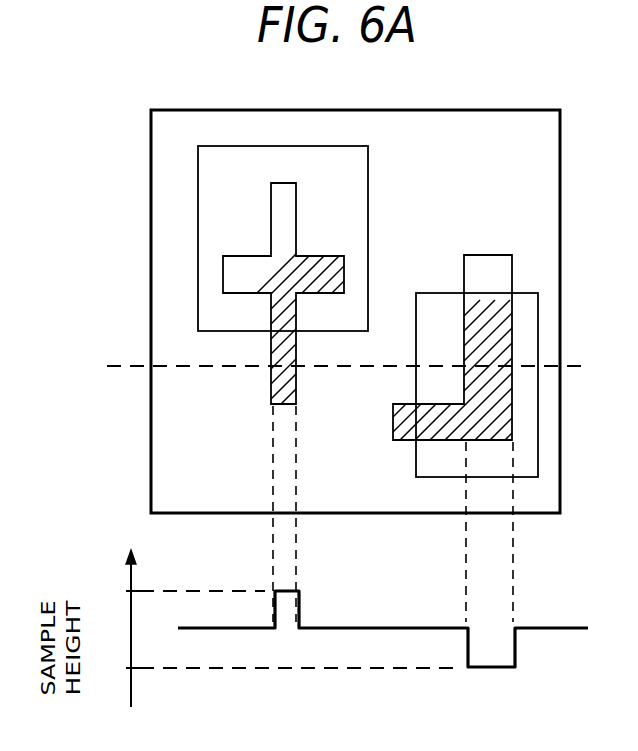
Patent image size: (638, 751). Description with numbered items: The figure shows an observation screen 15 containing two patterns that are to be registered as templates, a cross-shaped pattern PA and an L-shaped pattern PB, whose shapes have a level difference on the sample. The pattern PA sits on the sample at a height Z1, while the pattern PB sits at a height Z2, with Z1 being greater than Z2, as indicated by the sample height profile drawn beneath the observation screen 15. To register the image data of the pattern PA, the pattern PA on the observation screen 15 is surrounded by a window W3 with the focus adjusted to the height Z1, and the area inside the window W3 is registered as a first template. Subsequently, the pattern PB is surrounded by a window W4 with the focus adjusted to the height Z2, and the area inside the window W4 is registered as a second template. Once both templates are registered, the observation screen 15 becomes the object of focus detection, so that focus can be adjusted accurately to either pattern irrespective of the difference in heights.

The observation screen 15 is at (209, 105).
The window W3 is at (368, 163).
The window W4 is at (416, 470).
The pattern PA is at (344, 256).
The pattern PB is at (393, 412).
The height Z1 is at (180, 593).
The height Z2 is at (279, 670).